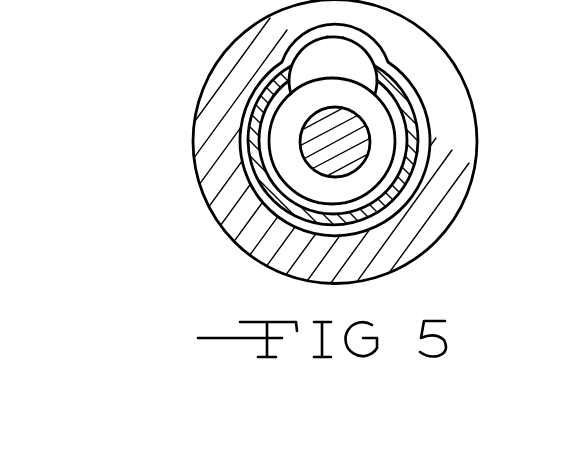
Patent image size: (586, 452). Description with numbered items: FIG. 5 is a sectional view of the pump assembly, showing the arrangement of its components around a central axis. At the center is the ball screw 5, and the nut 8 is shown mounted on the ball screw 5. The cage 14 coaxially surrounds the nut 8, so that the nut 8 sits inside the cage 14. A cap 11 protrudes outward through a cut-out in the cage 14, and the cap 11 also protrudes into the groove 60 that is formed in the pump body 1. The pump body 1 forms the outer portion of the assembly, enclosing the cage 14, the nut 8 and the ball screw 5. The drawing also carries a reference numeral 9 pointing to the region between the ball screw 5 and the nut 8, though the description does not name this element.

The pump body 1 is at (450, 82).
The groove 60 is at (293, 54).
The cap 11 is at (357, 56).
The cage 14 is at (420, 130).
The nut 8 is at (377, 173).
The ball screw 5 is at (317, 143).
The annular gap 9 is at (305, 167).